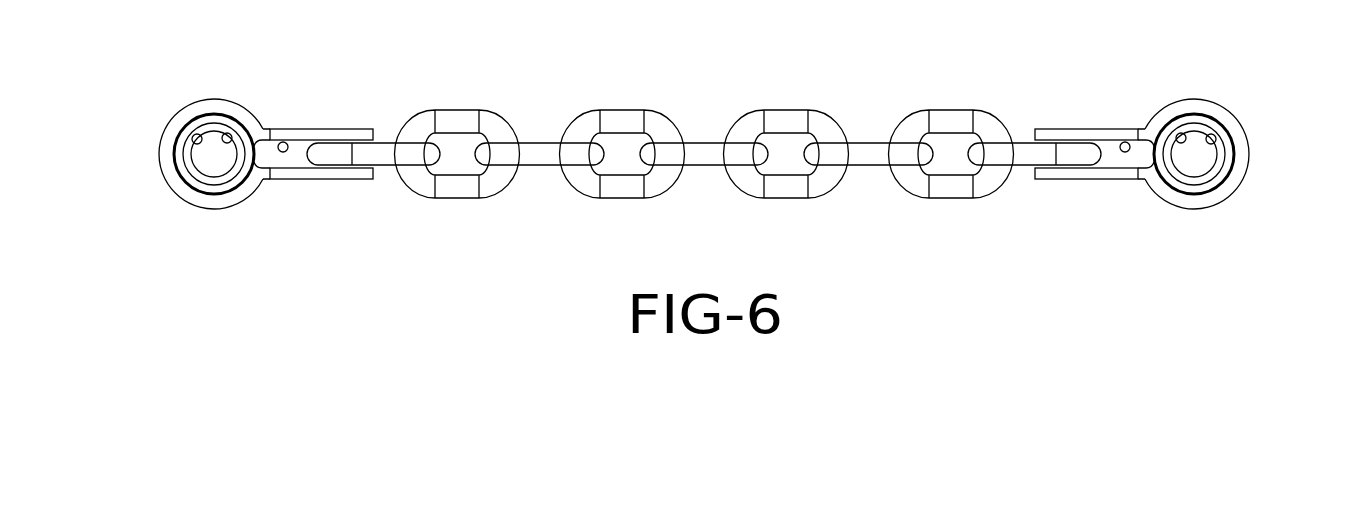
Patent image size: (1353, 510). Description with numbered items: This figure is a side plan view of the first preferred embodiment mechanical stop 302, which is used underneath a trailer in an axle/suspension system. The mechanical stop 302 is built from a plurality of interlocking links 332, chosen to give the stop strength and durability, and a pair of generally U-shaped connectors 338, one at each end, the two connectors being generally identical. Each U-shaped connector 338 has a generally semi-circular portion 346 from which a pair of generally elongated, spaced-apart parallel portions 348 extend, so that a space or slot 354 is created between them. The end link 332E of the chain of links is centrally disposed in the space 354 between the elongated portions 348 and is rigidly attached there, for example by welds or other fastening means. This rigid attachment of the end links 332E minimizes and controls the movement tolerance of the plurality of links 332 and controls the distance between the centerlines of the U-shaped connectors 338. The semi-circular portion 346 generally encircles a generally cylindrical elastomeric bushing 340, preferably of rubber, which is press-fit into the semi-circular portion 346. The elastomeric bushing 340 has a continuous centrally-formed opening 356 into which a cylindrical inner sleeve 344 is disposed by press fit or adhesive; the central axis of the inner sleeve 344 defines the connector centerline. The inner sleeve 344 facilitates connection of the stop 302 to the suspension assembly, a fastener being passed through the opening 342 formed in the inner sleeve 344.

The mechanical stop 302 is at (672, 86).
The interlocking links 332 is at (462, 199).
The end link 332E is at (382, 168).
The U-shaped connector 338 is at (705, 183).
The elastomeric bushing 340 is at (220, 192).
The opening 342 is at (224, 138).
The inner sleeve 344 is at (197, 183).
The semi-circular portion 346 is at (172, 192).
The elongated portions 348 is at (347, 128).
The space 354 is at (282, 141).
The opening 356 is at (193, 145).